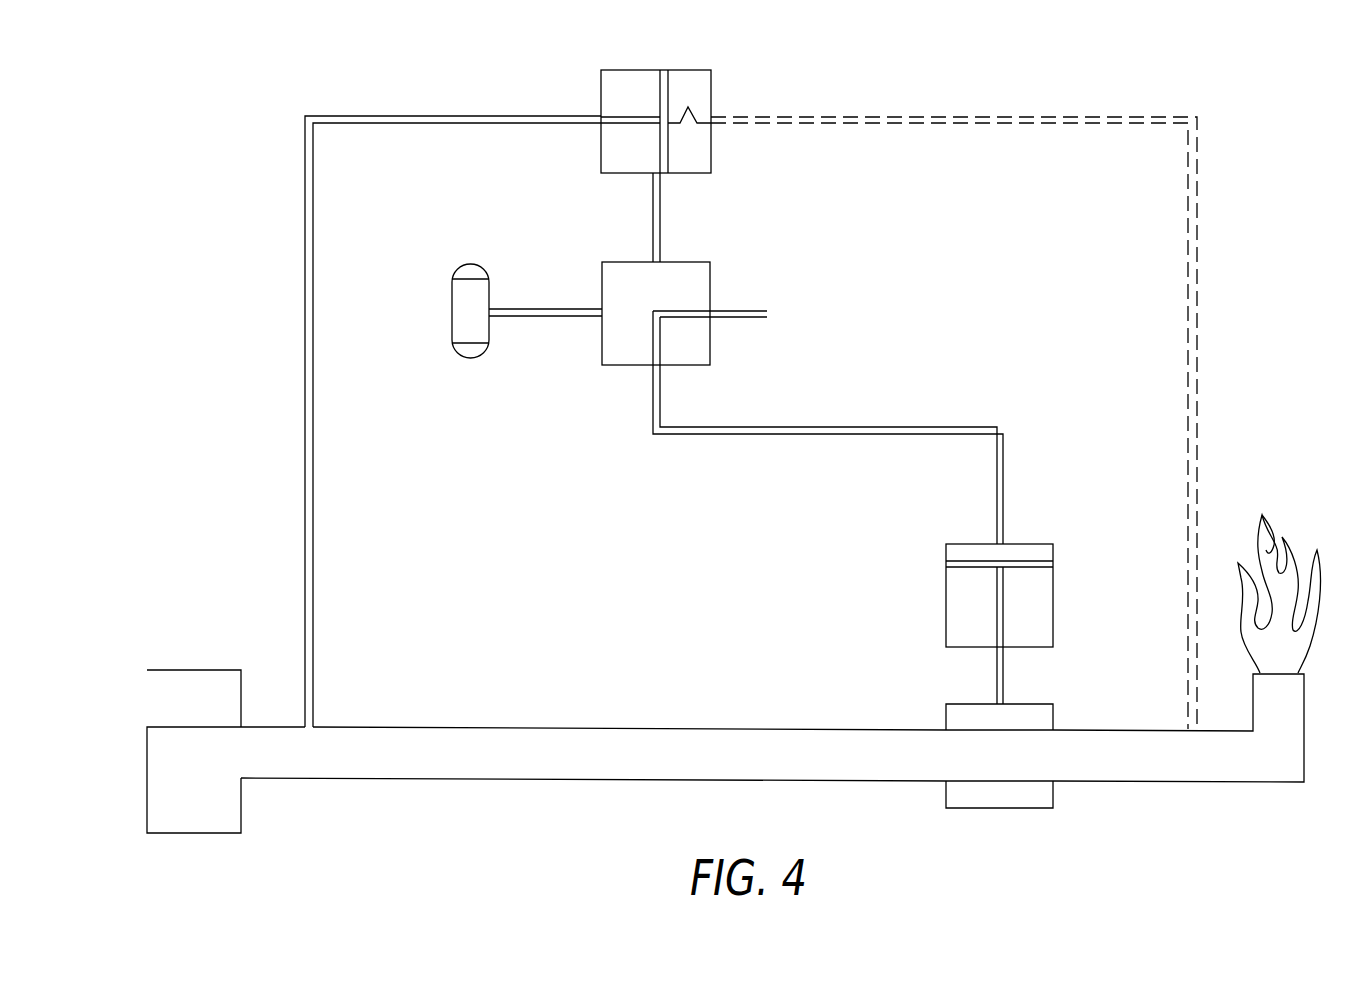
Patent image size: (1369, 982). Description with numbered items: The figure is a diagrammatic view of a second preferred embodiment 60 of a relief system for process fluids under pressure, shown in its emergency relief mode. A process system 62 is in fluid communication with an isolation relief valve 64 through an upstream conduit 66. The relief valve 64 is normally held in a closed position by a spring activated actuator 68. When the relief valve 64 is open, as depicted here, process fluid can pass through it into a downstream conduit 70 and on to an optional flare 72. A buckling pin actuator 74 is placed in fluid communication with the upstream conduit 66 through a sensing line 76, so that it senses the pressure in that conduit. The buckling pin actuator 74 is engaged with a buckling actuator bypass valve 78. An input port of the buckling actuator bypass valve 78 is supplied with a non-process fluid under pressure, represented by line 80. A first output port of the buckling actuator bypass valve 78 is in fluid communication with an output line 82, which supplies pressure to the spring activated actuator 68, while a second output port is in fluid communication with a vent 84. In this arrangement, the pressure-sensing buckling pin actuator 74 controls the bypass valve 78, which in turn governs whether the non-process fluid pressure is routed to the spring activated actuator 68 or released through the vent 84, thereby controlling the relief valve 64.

The second preferred embodiment 60 is at (224, 134).
The process system 62 is at (200, 670).
The isolation relief valve 64 is at (1000, 808).
The upstream conduit 66 is at (418, 780).
The spring activated actuator 68 is at (1045, 543).
The downstream conduit 70 is at (1160, 782).
The flare 72 is at (1272, 520).
The buckling pin actuator 74 is at (647, 70).
The sensing line 76 is at (305, 377).
The buckling actuator bypass valve 78 is at (693, 262).
The line 80 is at (527, 308).
The output line 82 is at (822, 427).
The vent 84 is at (745, 308).